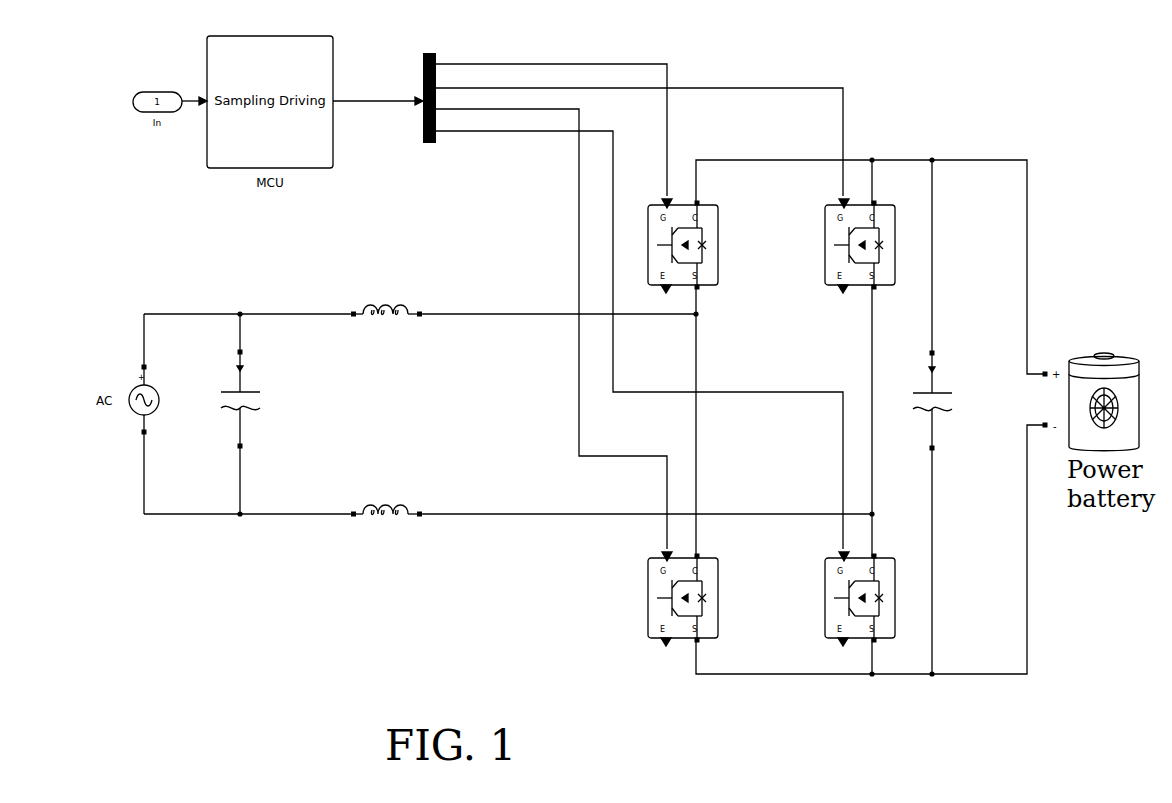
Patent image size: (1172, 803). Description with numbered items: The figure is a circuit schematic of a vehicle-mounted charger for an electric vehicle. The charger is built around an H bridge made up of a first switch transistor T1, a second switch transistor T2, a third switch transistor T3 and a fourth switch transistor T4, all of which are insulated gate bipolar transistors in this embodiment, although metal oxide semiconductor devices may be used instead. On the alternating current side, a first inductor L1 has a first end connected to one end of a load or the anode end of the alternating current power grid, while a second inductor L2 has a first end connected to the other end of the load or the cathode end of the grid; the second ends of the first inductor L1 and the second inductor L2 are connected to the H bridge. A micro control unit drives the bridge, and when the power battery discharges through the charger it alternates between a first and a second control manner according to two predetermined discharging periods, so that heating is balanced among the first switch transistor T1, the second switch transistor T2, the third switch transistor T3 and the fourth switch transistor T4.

The first switch transistor T1 is at (692, 246).
The second switch transistor T2 is at (692, 599).
The third switch transistor T3 is at (869, 246).
The fourth switch transistor T4 is at (869, 599).
The first inductor L1 is at (386, 332).
The second inductor L2 is at (386, 532).